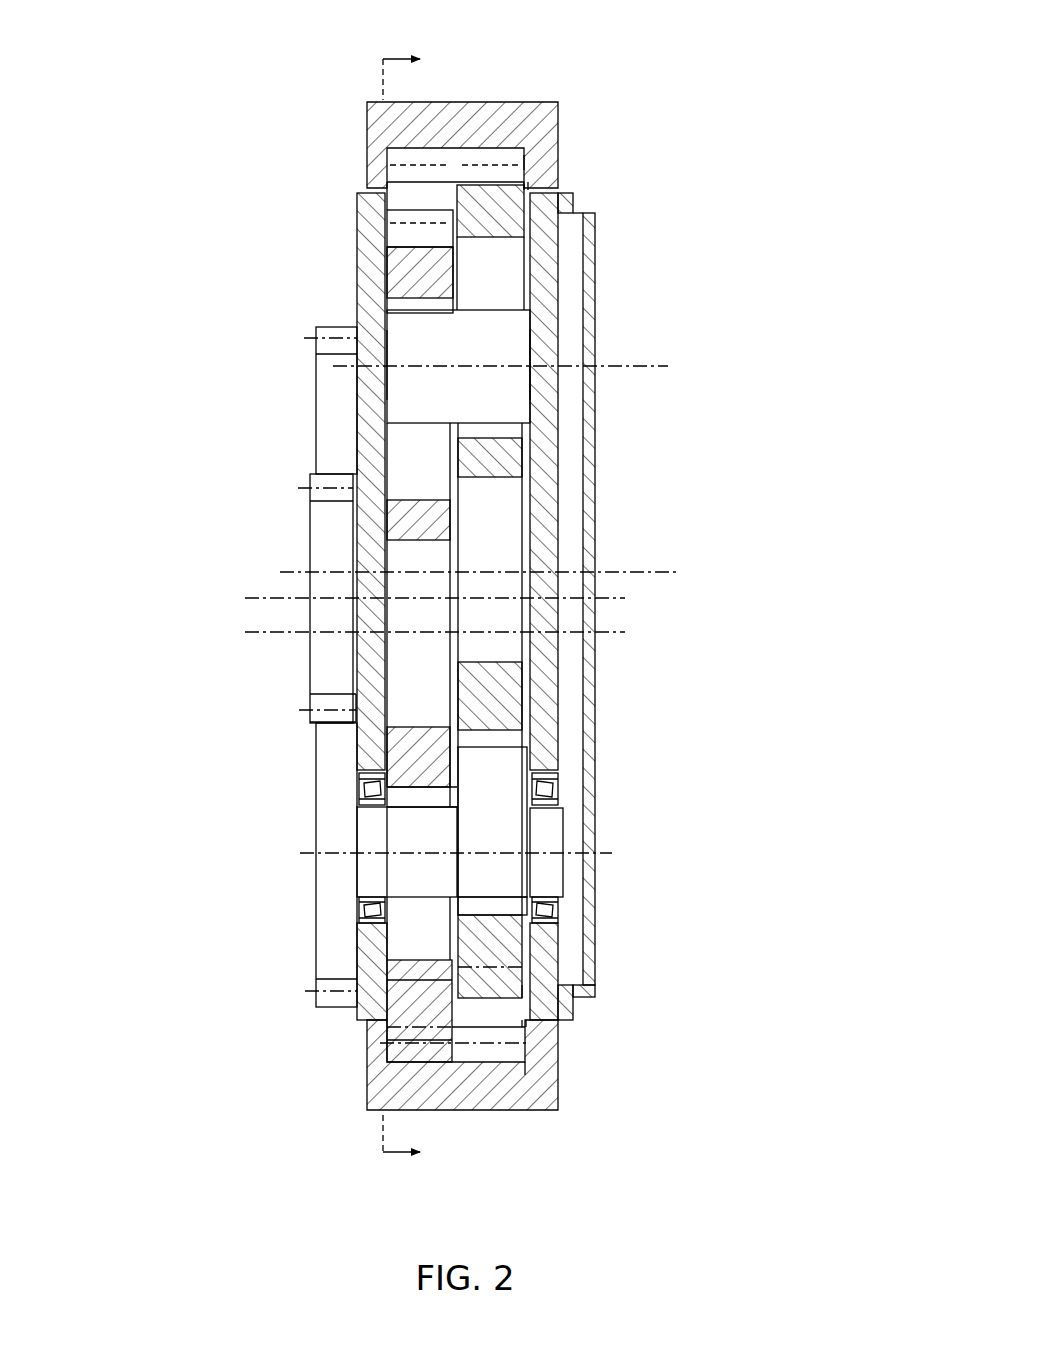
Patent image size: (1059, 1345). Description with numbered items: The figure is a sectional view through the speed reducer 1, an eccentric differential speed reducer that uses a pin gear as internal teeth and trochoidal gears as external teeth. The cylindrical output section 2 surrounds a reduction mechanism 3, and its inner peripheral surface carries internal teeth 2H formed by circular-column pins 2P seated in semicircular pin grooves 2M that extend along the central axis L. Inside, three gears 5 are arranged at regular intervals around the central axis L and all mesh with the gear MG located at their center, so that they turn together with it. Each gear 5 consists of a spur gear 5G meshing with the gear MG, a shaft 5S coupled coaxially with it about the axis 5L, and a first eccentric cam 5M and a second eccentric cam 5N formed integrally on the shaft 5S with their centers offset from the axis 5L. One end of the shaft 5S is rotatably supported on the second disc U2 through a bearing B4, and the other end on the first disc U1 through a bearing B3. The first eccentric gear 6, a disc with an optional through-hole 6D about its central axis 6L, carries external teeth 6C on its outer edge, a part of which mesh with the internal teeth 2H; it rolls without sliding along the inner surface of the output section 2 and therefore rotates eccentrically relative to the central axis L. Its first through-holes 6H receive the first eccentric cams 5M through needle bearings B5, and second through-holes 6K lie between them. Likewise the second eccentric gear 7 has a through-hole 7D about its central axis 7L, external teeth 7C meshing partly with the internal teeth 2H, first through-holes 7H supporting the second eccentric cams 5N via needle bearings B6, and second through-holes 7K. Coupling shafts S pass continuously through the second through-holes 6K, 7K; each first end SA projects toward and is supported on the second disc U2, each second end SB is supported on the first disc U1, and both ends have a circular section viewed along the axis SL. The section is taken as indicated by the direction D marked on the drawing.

The speed reducer 1 is at (655, 43).
The output section 2 is at (527, 100).
The pin grooves 2M is at (518, 160).
The pins 2P is at (532, 180).
The internal teeth 2H is at (668, 90).
The reduction mechanism 3 is at (600, 455).
The first disc U1 is at (358, 203).
The second disc U2 is at (548, 238).
The coupling shaft S is at (405, 323).
The first end of coupling shaft SA is at (546, 348).
The second end of coupling shaft SB is at (372, 342).
The axis of coupling shaft SL is at (521, 366).
The gear 5 is at (333, 373).
The spur gear 5G is at (327, 749).
The first eccentric cam 5M is at (400, 880).
The second eccentric cam 5N is at (518, 767).
The shaft 5S is at (548, 833).
The axis of shaft 5L is at (437, 851).
The first eccentric gear 6 is at (398, 1005).
The second through-holes of first eccentric gear 6K is at (422, 500).
The through-hole of first eccentric gear 6D is at (420, 723).
The first through-holes of first eccentric gear 6H is at (407, 970).
The external teeth of first eccentric gear 6C is at (400, 1052).
The central axis of first eccentric gear 6L is at (412, 631).
The second eccentric gear 7 is at (510, 950).
The second through-holes of second eccentric gear 7K is at (493, 437).
The through-hole of second eccentric gear 7D is at (500, 496).
The first through-holes of second eccentric gear 7H is at (498, 895).
The external teeth of second eccentric gear 7C is at (550, 1005).
The central axis of second eccentric gear 7L is at (498, 572).
The central axis L is at (420, 600).
The gear MG is at (307, 558).
The bearing B3 is at (362, 776).
The bearing B4 is at (540, 780).
The needle bearing B5 is at (385, 935).
The needle bearing B6 is at (545, 893).
The direction D is at (396, 608).